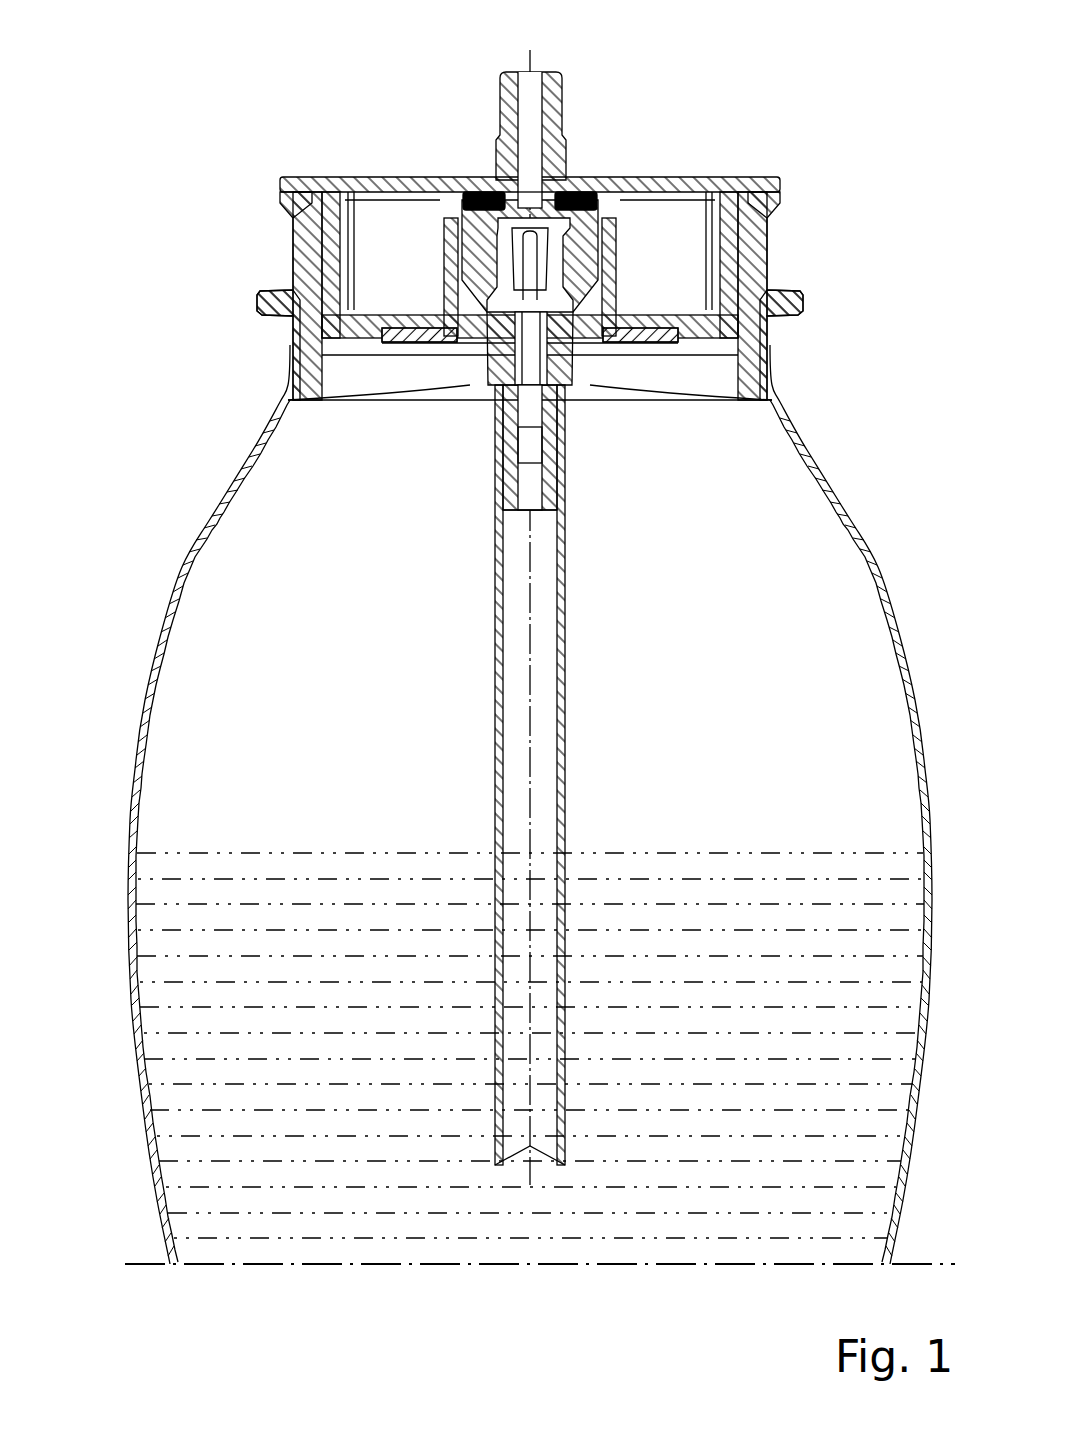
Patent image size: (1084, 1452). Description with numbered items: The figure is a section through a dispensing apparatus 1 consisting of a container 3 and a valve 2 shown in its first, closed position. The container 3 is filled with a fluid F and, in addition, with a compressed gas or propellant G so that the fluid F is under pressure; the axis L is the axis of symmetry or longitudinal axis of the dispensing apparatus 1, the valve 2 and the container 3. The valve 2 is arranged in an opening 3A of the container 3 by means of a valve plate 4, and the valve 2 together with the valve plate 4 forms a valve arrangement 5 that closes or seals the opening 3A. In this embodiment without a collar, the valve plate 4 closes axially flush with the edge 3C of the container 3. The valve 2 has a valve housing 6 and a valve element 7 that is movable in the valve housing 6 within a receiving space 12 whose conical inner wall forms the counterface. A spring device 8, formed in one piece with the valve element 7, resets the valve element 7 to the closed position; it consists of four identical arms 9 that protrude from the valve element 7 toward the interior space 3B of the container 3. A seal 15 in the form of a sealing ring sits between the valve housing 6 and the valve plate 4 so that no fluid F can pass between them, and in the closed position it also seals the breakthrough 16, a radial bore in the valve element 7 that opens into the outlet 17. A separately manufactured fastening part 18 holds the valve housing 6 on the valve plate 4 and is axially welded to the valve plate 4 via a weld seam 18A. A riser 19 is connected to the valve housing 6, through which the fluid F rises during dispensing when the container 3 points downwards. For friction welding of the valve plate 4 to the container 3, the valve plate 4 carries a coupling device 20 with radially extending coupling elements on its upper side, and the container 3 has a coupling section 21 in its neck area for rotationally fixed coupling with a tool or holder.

The dispensing apparatus 1 is at (242, 84).
The valve 2 is at (600, 77).
The container 3 is at (815, 460).
The opening 3A is at (677, 180).
The interior space 3B is at (788, 532).
The edge 3C is at (765, 190).
The valve plate 4 is at (740, 248).
The valve arrangement 5 is at (452, 380).
The valve housing 6 is at (590, 385).
The valve element 7 is at (508, 102).
The spring device 8 is at (512, 236).
The arms 9 is at (553, 280).
The receiving space 12 is at (440, 298).
The seal 15 is at (455, 212).
The breakthrough 16 is at (500, 192).
The outlet 17 is at (535, 72).
The fastening part 18 is at (450, 258).
The weld seam 18A is at (305, 372).
The riser 19 is at (497, 590).
The coupling device 20 is at (388, 196).
The coupling section 21 is at (803, 303).
The compressed gas or propellant G is at (220, 752).
The axis L is at (530, 832).
The fluid F is at (205, 928).